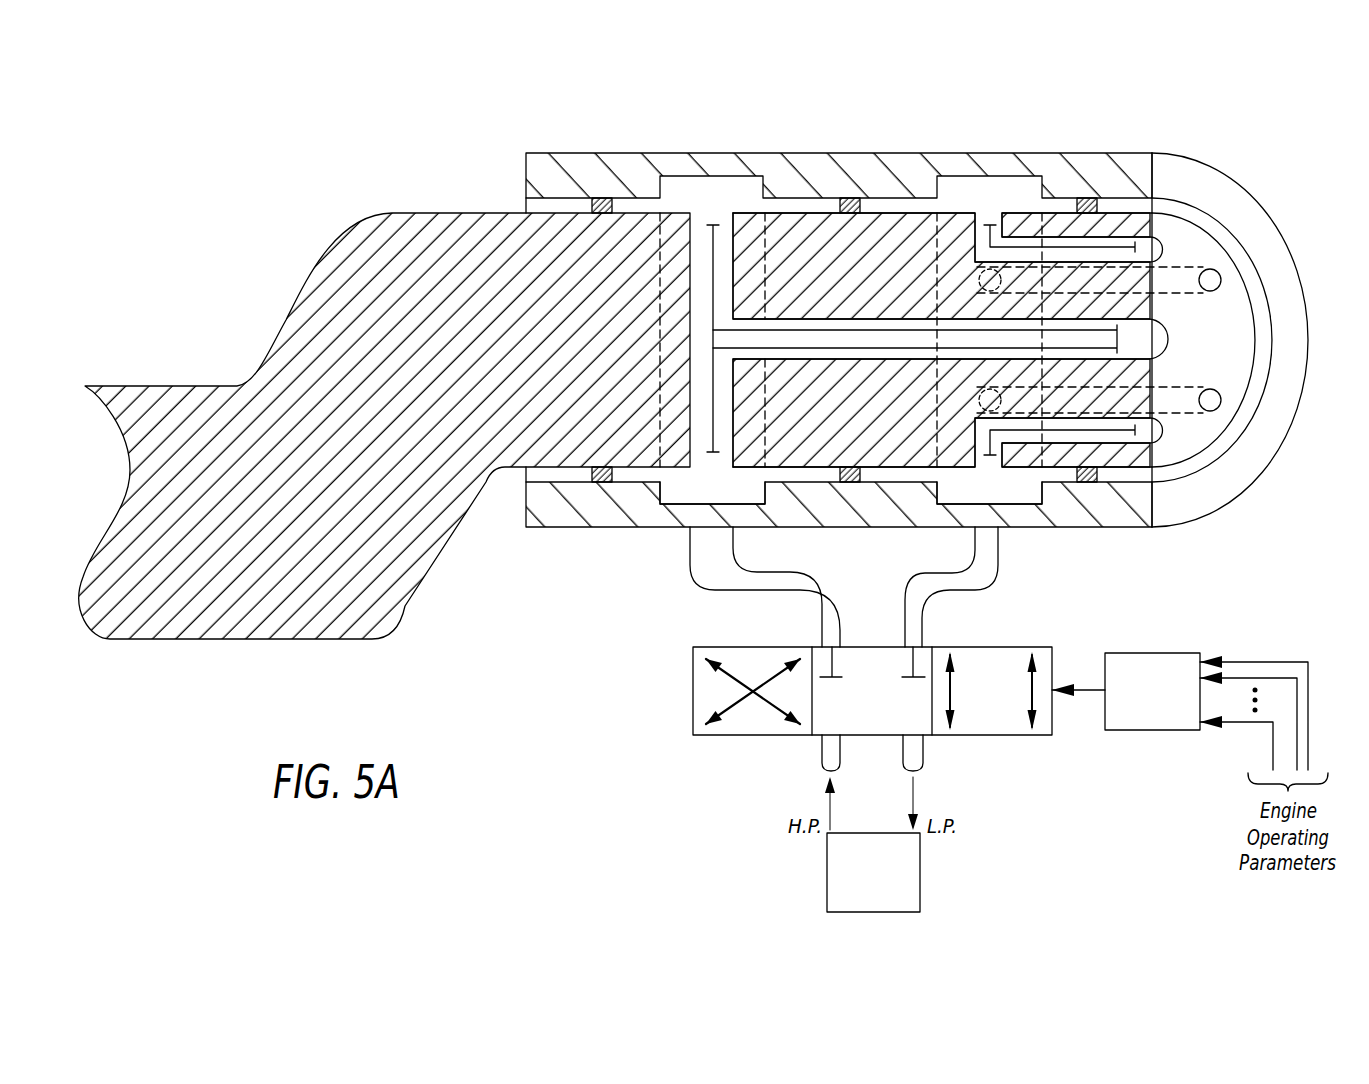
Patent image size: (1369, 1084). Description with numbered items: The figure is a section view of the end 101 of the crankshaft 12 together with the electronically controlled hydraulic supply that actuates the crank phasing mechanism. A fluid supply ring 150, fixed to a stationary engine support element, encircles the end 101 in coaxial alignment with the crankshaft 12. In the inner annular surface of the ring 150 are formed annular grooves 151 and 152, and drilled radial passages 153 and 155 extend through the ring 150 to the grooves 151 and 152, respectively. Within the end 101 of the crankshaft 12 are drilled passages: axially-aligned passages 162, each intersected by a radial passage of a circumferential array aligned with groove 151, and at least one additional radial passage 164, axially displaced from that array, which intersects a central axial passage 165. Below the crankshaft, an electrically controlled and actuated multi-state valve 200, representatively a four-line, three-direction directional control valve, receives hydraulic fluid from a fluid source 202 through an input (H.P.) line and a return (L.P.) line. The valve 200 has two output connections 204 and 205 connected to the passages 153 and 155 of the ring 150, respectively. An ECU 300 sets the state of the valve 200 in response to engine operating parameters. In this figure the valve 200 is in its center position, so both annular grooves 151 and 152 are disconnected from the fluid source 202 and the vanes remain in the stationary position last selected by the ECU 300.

The crankshaft 12 is at (418, 213).
The fluid supply ring 150 is at (558, 506).
The annular groove 151 is at (1027, 492).
The annular groove 152 is at (664, 488).
The radial passage 153 is at (988, 513).
The radial passage 155 is at (707, 513).
The end of the crankshaft 101 is at (805, 213).
The radial passage 164 is at (703, 220).
The central axial passage 165 is at (888, 328).
The axially-aligned passage 162 is at (1120, 245).
The multi-state valve 200 is at (693, 682).
The fluid source 202 is at (920, 877).
The output connection 204 is at (913, 577).
The output connection 205 is at (793, 572).
The ECU 300 is at (1163, 653).